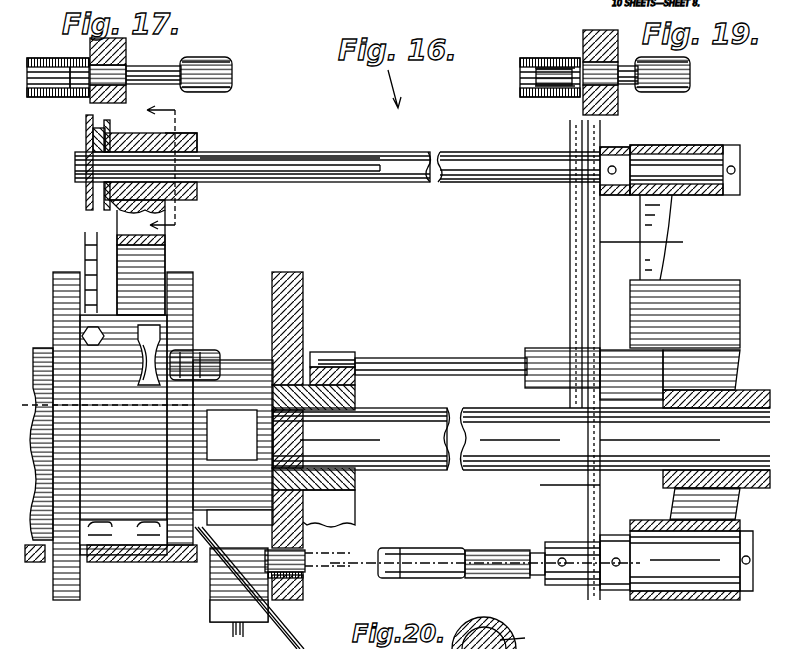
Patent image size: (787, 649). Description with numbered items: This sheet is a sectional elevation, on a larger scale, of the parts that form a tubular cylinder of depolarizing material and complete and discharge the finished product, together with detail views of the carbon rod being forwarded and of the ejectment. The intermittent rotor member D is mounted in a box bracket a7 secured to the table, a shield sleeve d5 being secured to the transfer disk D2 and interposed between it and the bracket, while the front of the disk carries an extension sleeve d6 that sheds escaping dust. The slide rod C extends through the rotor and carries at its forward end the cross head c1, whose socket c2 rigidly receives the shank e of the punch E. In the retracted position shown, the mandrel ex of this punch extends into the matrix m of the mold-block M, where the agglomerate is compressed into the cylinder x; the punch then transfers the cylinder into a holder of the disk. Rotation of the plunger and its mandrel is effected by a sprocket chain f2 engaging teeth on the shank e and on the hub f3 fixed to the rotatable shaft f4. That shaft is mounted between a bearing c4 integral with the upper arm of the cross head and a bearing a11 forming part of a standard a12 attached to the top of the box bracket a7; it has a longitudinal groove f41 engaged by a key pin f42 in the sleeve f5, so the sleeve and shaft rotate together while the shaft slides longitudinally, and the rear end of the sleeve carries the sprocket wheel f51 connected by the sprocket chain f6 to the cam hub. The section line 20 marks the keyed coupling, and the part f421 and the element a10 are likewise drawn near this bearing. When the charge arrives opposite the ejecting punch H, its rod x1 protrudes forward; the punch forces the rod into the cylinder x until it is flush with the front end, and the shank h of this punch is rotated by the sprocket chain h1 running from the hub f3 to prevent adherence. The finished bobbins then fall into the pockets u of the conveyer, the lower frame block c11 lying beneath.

In FIG. 17, the pocket u is at (53, 84).
In FIG. 19, the pocket u is at (516, 78).
In FIG. 16, the pocket u is at (244, 588).
In FIG. 17, the transfer disk D2 is at (90, 50).
In FIG. 19, the transfer disk D2 is at (583, 40).
In FIG. 16, the transfer disk D2 is at (305, 284).
In FIG. 17, the cylinder of compressed depolarizing agglomerate x is at (112, 95).
In FIG. 19, the cylinder of compressed depolarizing agglomerate x is at (565, 88).
In FIG. 16, the cylinder of compressed depolarizing agglomerate x is at (305, 575).
In FIG. 17, the rod x1 is at (70, 88).
In FIG. 19, the rod x1 is at (520, 92).
In FIG. 16, the rod x1 is at (315, 548).
In FIG. 17, the ejecting punch H is at (166, 68).
In FIG. 19, the ejecting punch H is at (622, 72).
In FIG. 16, the ejecting punch H is at (468, 555).
In FIG. 17, the shank of the punch H h is at (232, 74).
In FIG. 19, the shank of the punch H h is at (690, 74).
In FIG. 16, the shank of the punch H h is at (560, 548).
In FIG. 16, the rotatable shaft f4 is at (75, 170).
In FIG. 16, the longitudinal groove f41 is at (310, 163).
In FIG. 16, the sleeve f421 is at (208, 158).
In FIG. 16, the bearing a11 is at (145, 164).
In FIG. 20, the bearing a11 is at (523, 634).
In FIG. 16, the sprocket wheel f51 is at (86, 124).
In FIG. 16, the key pin f42 is at (103, 212).
In FIG. 16, the sleeve f5 is at (175, 167).
In FIG. 20, the sleeve f5 is at (478, 635).
In FIG. 16, the section line 20 is at (173, 168).
In FIG. 16, the standard a12 is at (150, 226).
In FIG. 16, the sprocket chain f6 is at (85, 248).
In FIG. 16, the intermittent rotor member D is at (53, 292).
In FIG. 16, the slide rod C is at (392, 441).
In FIG. 16, the box bracket a7 is at (138, 342).
In FIG. 16, the roller a10 is at (213, 352).
In FIG. 16, the shield sleeve d5 is at (233, 442).
In FIG. 16, the extension sleeve d6 is at (355, 397).
In FIG. 16, the mold-block M is at (340, 503).
In FIG. 16, the matrix m is at (352, 358).
In FIG. 16, the mandrel ex is at (332, 357).
In FIG. 16, the punch E is at (478, 362).
In FIG. 16, the shank of the punch E e is at (543, 350).
In FIG. 16, the socket c2 is at (640, 372).
In FIG. 16, the sprocket chain f2 is at (570, 272).
In FIG. 16, the hub f3 is at (612, 147).
In FIG. 16, the bearing c4 is at (712, 145).
In FIG. 16, the sprocket chain h1 is at (609, 347).
In FIG. 16, the cross head c1 is at (700, 344).
In FIG. 16, the lower frame block c11 is at (700, 535).